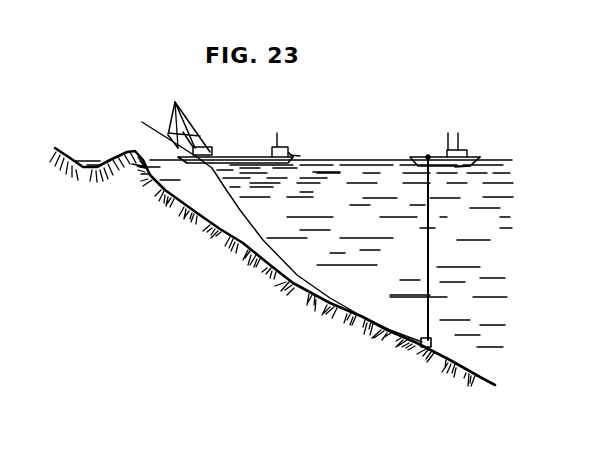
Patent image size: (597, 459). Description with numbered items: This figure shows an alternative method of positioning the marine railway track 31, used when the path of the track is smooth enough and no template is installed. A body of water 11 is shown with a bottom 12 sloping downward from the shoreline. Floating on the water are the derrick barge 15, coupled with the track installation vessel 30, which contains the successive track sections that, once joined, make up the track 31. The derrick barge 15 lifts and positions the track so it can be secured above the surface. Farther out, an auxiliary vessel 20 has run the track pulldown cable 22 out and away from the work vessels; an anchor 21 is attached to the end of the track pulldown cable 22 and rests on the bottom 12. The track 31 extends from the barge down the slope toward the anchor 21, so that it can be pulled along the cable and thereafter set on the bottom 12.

The body of water 11 is at (348, 205).
The bottom 12 is at (185, 285).
The derrick barge 15 is at (206, 142).
The auxiliary vessel 20 is at (443, 155).
The anchor 21 is at (430, 343).
The track pulldown cable 22 is at (425, 247).
The track installation vessel 30 is at (290, 155).
The track 31 is at (157, 133).